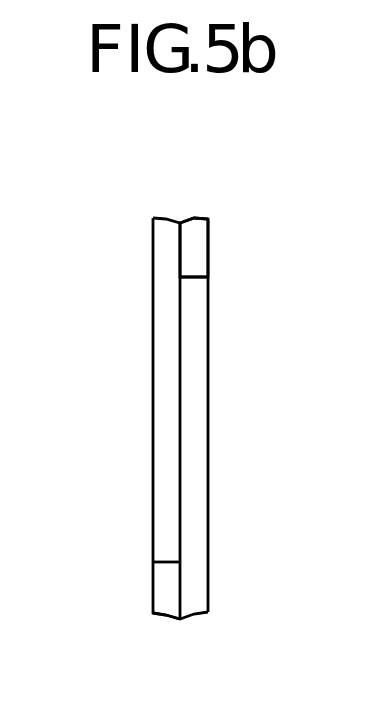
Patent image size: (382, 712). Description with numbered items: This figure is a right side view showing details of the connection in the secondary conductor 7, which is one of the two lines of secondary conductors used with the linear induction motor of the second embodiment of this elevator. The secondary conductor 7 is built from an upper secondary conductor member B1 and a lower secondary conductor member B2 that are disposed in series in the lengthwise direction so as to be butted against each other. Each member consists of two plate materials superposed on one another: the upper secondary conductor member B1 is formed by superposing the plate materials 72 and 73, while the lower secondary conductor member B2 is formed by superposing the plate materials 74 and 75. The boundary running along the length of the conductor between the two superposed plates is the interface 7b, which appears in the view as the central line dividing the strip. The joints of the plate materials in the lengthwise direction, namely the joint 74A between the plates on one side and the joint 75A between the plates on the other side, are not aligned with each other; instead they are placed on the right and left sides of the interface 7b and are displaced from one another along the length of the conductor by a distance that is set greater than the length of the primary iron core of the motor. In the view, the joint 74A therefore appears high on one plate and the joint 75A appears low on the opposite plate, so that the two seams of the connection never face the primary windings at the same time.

The secondary conductor 7 is at (183, 215).
The interface 7b is at (179, 411).
The plate material 72 is at (199, 239).
The plate material 73 is at (160, 315).
The plate material 74 is at (201, 470).
The joint 74A is at (187, 281).
The plate material 75 is at (160, 598).
The joint 75A is at (162, 558).
The upper secondary conductor member B1 is at (150, 256).
The lower secondary conductor member B2 is at (211, 548).